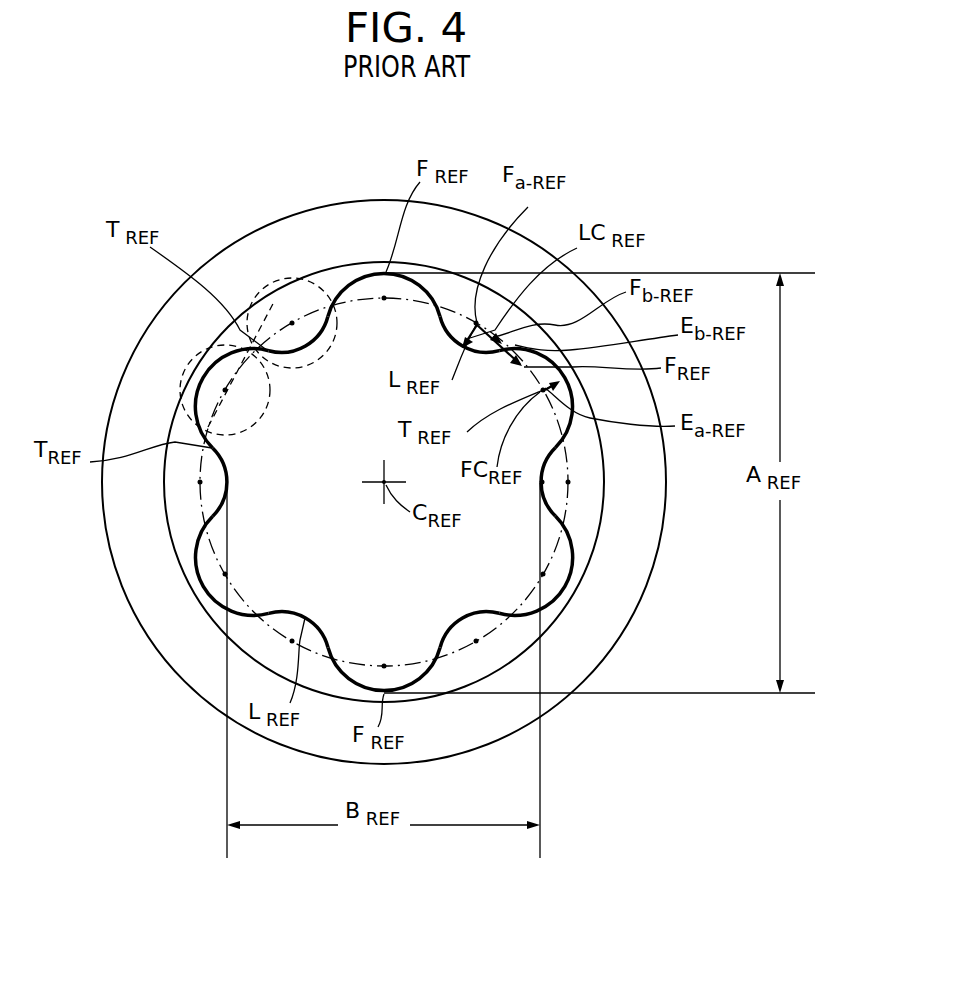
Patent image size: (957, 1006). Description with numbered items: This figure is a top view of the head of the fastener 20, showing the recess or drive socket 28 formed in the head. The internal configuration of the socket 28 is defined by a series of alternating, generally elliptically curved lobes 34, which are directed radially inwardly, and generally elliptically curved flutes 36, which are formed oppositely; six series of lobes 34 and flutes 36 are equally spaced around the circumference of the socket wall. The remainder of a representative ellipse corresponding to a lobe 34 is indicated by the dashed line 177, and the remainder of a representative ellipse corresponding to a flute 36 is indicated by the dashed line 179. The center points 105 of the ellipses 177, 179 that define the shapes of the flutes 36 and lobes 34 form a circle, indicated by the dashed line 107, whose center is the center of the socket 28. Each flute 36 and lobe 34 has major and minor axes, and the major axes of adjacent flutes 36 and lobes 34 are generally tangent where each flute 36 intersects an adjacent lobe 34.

The fastener 20 is at (358, 482).
The recess or drive socket 28 is at (215, 622).
The lobes 34 is at (303, 346).
The flutes 36 is at (203, 378).
The center points 105 is at (227, 391).
The dashed line (circle of ellipse center points) 107 is at (343, 657).
The dashed line (lobe ellipse) 177 is at (291, 280).
The dashed line (flute ellipse) 179 is at (266, 377).